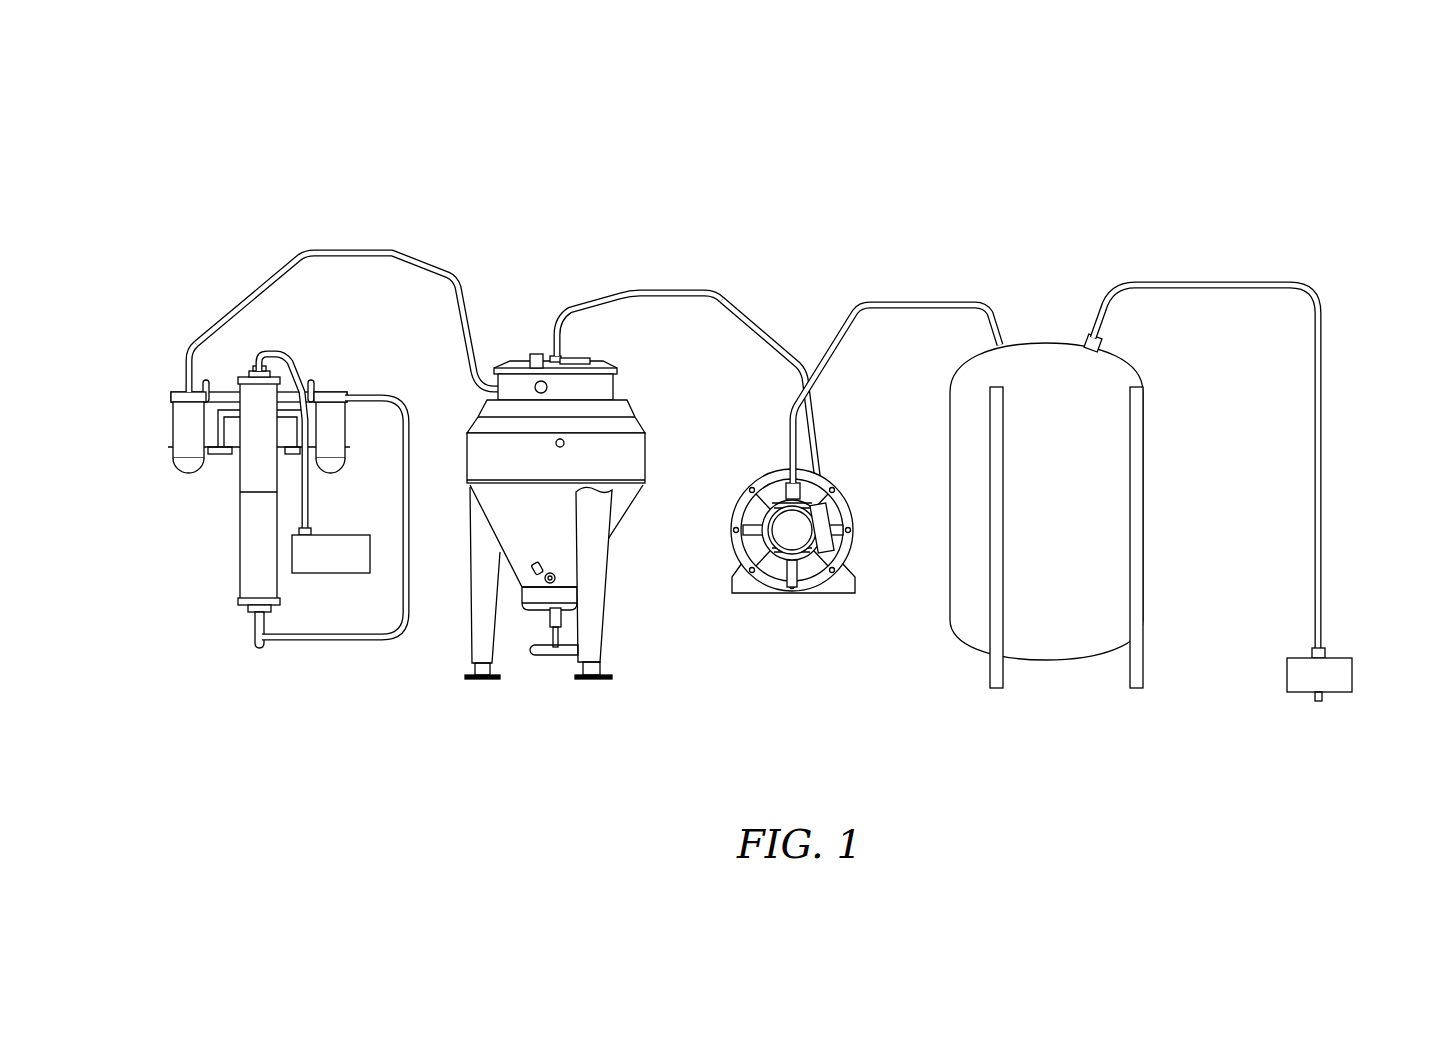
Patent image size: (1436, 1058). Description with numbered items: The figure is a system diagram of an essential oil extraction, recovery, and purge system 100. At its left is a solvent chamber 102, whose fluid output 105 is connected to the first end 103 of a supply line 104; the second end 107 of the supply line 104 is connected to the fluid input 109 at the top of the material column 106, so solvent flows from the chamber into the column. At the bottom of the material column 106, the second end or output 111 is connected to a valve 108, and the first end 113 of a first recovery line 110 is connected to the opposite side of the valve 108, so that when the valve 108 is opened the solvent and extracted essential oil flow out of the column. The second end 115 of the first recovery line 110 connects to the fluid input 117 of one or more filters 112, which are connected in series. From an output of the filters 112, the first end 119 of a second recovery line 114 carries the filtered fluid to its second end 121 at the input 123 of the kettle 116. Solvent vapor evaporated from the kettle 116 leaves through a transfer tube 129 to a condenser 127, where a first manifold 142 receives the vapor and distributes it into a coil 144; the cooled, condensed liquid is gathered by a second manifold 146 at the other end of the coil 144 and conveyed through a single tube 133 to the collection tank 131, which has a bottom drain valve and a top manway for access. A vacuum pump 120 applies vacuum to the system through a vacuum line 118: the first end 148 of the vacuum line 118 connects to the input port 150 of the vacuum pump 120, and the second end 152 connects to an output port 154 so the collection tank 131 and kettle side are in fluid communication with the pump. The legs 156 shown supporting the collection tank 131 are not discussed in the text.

The essential oil extraction, recovery, and purge system 100 is at (552, 117).
The solvent chamber 102 is at (250, 296).
The first end of the supply line 103 is at (312, 516).
The supply line 104 is at (290, 349).
The fluid output of the solvent chamber 105 is at (321, 531).
The material column 106 is at (240, 553).
The second end of the supply line 107 is at (275, 352).
The valve 108 is at (254, 627).
The fluid input of the material column 109 is at (238, 371).
The first recovery line 110 is at (402, 628).
The second end or output of the material column 111 is at (236, 606).
The filters 112 is at (172, 435).
The first end of the first recovery line 113 is at (270, 646).
The second recovery line 114 is at (372, 247).
The second end of the first recovery line 115 is at (374, 394).
The kettle 116 is at (553, 298).
The fluid input of the filters 117 is at (347, 388).
The vacuum line 118 is at (1300, 277).
The first end of the second recovery line 119 is at (182, 351).
The vacuum pump 120 is at (1286, 676).
The second end of the second recovery line 121 is at (508, 392).
The input of the kettle 123 is at (558, 386).
The condenser 127 is at (812, 347).
The transfer tube 129 is at (678, 293).
The collection tank 131 is at (1061, 318).
The tube 133 is at (905, 316).
The first manifold 142 is at (829, 510).
The coil 144 is at (757, 540).
The second manifold 146 is at (784, 492).
The first end of the vacuum line 148 is at (1323, 618).
The input port of the vacuum pump 150 is at (1330, 652).
The second end of the vacuum line 152 is at (1108, 314).
The output port 154 is at (1110, 349).
The tank legs 156 is at (989, 666).